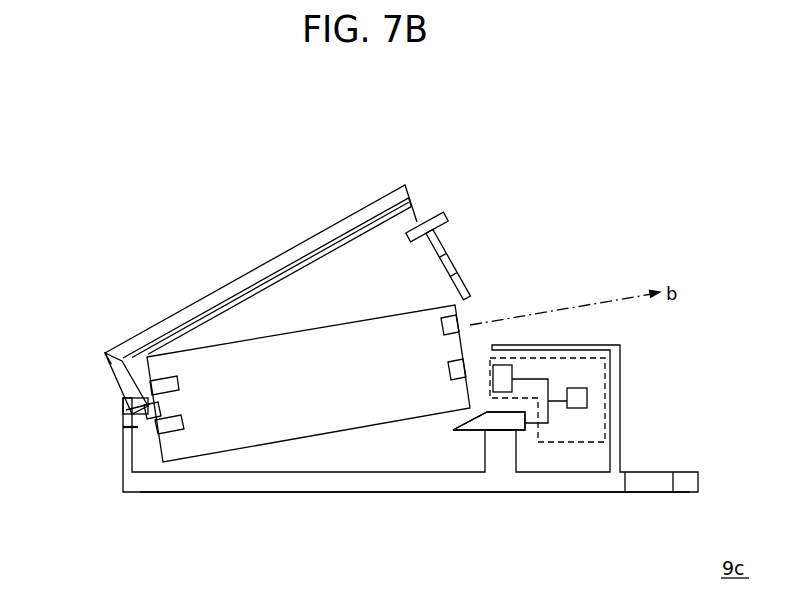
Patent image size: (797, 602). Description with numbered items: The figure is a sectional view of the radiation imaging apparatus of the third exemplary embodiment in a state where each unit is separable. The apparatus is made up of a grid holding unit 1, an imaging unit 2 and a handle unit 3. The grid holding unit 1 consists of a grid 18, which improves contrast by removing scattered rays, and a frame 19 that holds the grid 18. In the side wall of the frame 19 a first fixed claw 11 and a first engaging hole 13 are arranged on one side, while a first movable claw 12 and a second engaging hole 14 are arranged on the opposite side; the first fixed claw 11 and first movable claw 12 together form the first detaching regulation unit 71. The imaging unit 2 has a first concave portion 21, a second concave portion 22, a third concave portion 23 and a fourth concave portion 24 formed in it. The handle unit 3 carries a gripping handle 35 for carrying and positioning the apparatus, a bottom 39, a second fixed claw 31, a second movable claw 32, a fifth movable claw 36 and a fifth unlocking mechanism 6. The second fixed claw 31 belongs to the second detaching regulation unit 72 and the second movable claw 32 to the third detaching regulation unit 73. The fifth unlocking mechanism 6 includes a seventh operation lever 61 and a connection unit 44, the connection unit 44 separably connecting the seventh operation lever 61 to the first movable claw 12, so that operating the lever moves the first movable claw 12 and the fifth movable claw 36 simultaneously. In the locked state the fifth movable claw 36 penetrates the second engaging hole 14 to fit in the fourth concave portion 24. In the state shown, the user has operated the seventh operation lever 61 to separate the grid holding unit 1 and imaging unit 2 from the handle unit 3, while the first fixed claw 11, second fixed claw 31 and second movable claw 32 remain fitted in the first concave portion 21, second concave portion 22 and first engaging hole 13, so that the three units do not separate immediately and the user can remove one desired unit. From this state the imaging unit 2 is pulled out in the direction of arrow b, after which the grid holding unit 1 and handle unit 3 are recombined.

The grid holding unit 1 is at (296, 267).
The imaging unit 2 is at (340, 307).
The handle unit 3 is at (370, 515).
The fifth unlocking mechanism 6 is at (577, 376).
The first fixed claw 11 is at (119, 370).
The first movable claw 12 is at (448, 217).
The first engaging hole 13 is at (137, 398).
The second engaging hole 14 is at (458, 263).
The grid 18 is at (262, 286).
The frame 19 is at (203, 297).
The first concave portion 21 is at (176, 382).
The second concave portion 22 is at (183, 432).
The third concave portion 23 is at (466, 308).
The fourth concave portion 24 is at (467, 360).
The second fixed claw 31 is at (125, 428).
The second movable claw 32 is at (124, 409).
The gripping handle 35 is at (687, 488).
The fifth movable claw 36 is at (502, 432).
The bottom 39 is at (257, 493).
The connection unit 44 is at (508, 378).
The seventh operation lever 61 is at (588, 396).
The first detaching regulation unit 71 is at (296, 306).
The second detaching regulation unit 72 is at (310, 475).
The third detaching regulation unit 73 is at (273, 411).